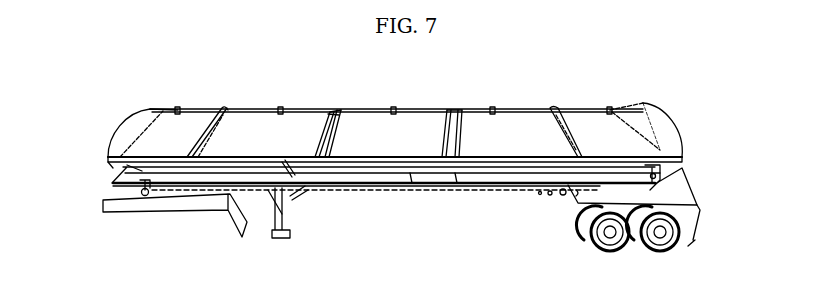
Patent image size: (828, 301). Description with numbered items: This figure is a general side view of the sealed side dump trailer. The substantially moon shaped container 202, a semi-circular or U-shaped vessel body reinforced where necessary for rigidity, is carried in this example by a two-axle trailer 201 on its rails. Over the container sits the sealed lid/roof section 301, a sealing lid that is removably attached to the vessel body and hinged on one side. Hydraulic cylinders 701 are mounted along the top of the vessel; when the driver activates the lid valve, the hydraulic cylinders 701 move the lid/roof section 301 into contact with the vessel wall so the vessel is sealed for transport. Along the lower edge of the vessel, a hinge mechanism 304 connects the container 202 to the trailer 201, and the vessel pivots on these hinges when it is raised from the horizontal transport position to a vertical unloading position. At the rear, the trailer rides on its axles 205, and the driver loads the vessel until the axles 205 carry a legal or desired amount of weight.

The hydraulic cylinders 701 is at (335, 112).
The sealed lid/roof section 301 is at (527, 133).
The hinge mechanism 304 is at (123, 187).
The substantially moon shaped container 202 is at (390, 167).
The two-axle trailer 201 is at (532, 189).
The axle 205 is at (657, 242).